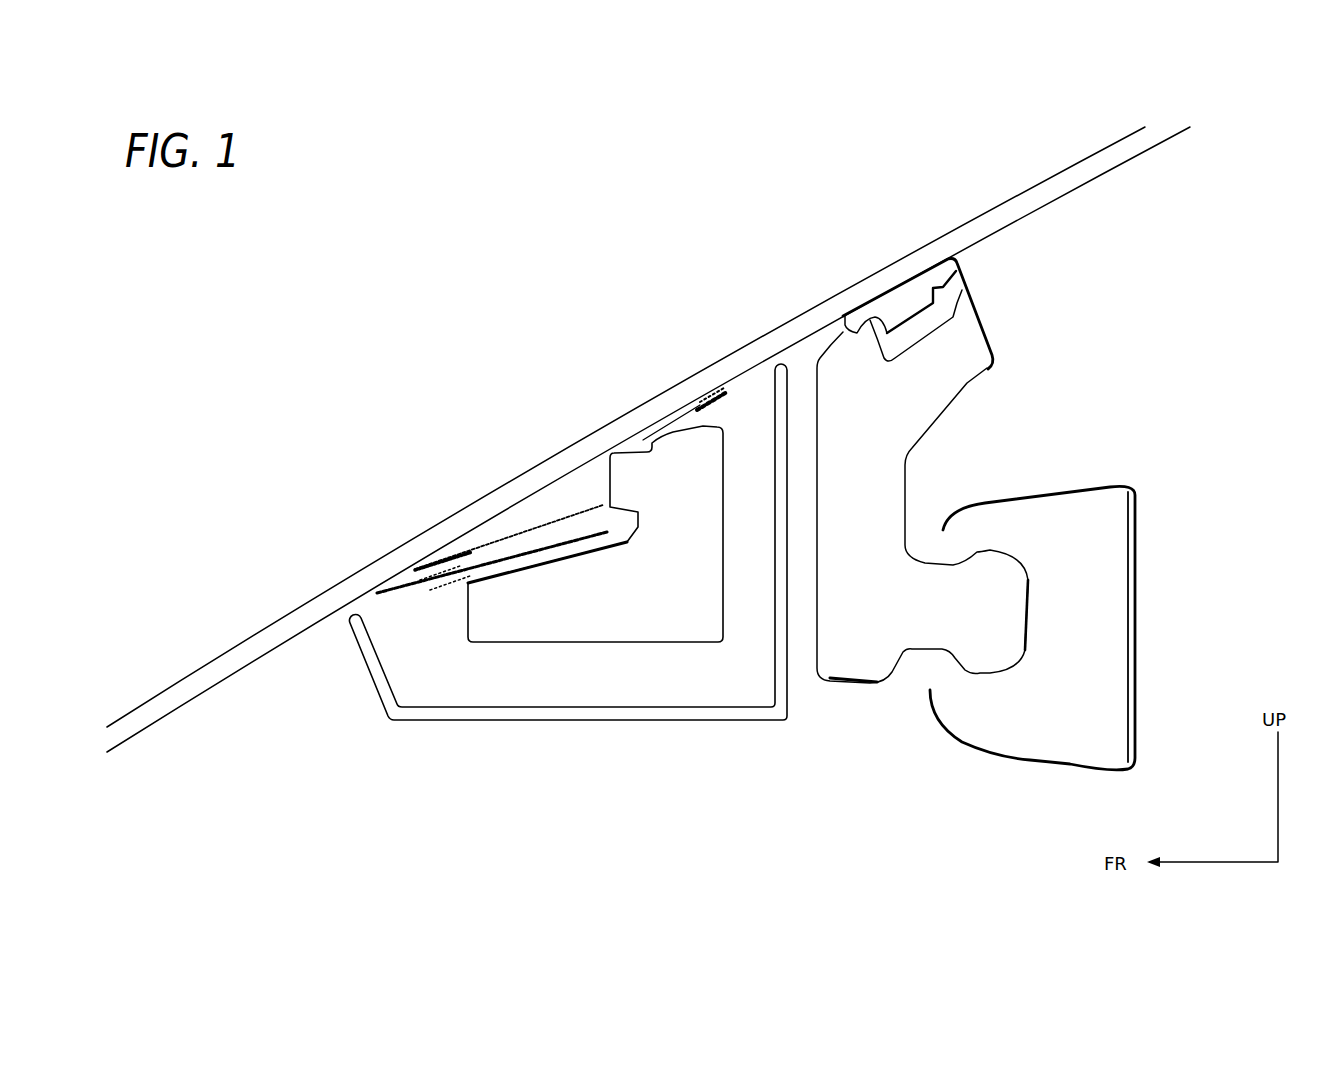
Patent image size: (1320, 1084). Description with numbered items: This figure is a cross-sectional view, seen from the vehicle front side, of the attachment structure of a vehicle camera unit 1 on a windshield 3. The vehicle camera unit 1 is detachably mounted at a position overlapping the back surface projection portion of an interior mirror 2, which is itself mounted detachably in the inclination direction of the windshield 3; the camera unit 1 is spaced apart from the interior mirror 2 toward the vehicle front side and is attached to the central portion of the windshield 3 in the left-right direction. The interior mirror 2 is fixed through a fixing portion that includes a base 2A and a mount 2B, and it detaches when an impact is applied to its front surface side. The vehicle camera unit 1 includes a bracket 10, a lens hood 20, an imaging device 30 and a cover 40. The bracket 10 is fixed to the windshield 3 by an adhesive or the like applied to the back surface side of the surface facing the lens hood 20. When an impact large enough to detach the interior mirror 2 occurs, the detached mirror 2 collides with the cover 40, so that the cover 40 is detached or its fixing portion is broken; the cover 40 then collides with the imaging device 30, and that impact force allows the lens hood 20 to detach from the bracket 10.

The vehicle camera unit 1 is at (530, 544).
The interior mirror 2 is at (983, 512).
The base 2A is at (958, 262).
The mount 2B is at (960, 301).
The windshield 3 is at (322, 608).
The bracket 10 is at (724, 383).
The lens hood 20 is at (424, 568).
The imaging device 30 is at (688, 648).
The cover 40 is at (578, 722).